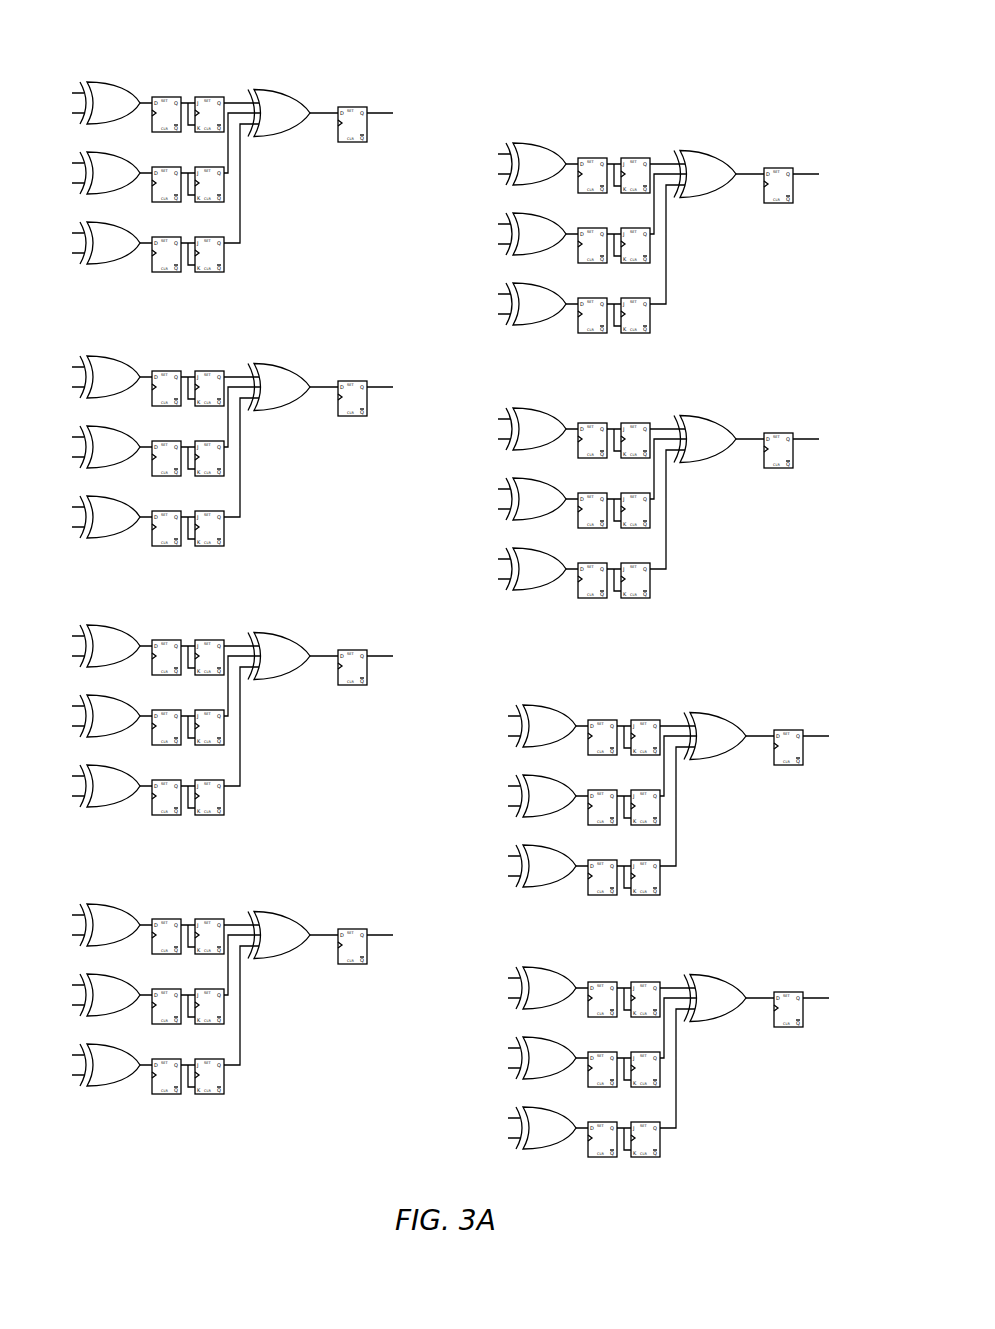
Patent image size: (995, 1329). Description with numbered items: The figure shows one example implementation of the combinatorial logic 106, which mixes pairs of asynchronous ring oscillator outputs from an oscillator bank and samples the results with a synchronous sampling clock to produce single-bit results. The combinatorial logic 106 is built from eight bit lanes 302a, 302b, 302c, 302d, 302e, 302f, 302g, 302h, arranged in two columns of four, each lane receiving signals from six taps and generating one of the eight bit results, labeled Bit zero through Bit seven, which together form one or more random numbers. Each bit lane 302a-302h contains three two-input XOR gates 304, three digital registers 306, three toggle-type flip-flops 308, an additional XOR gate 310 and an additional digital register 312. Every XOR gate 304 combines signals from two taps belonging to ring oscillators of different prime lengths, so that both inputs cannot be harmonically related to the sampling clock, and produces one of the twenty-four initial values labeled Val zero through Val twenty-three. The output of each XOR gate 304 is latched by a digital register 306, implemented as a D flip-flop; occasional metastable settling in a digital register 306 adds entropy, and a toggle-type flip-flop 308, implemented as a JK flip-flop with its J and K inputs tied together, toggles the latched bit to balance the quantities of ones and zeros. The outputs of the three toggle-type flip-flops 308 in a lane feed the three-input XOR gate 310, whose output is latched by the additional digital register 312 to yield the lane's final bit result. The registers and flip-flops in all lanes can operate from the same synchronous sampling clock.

The combinatorial logic 106 is at (179, 1162).
The bit lane 302a is at (236, 145).
The bit lane 302b is at (235, 436).
The bit lane 302c is at (236, 707).
The bit lane 302d is at (235, 983).
The bit lane 302e is at (661, 215).
The bit lane 302f is at (661, 491).
The bit lane 302g is at (671, 778).
The bit lane 302h is at (672, 1049).
The logic XOR gate 304 is at (99, 82).
The digital register 306 is at (189, 93).
The toggle-type flip-flop 308 is at (242, 80).
The additional logic XOR gate 310 is at (290, 137).
The additional digital register 312 is at (374, 104).